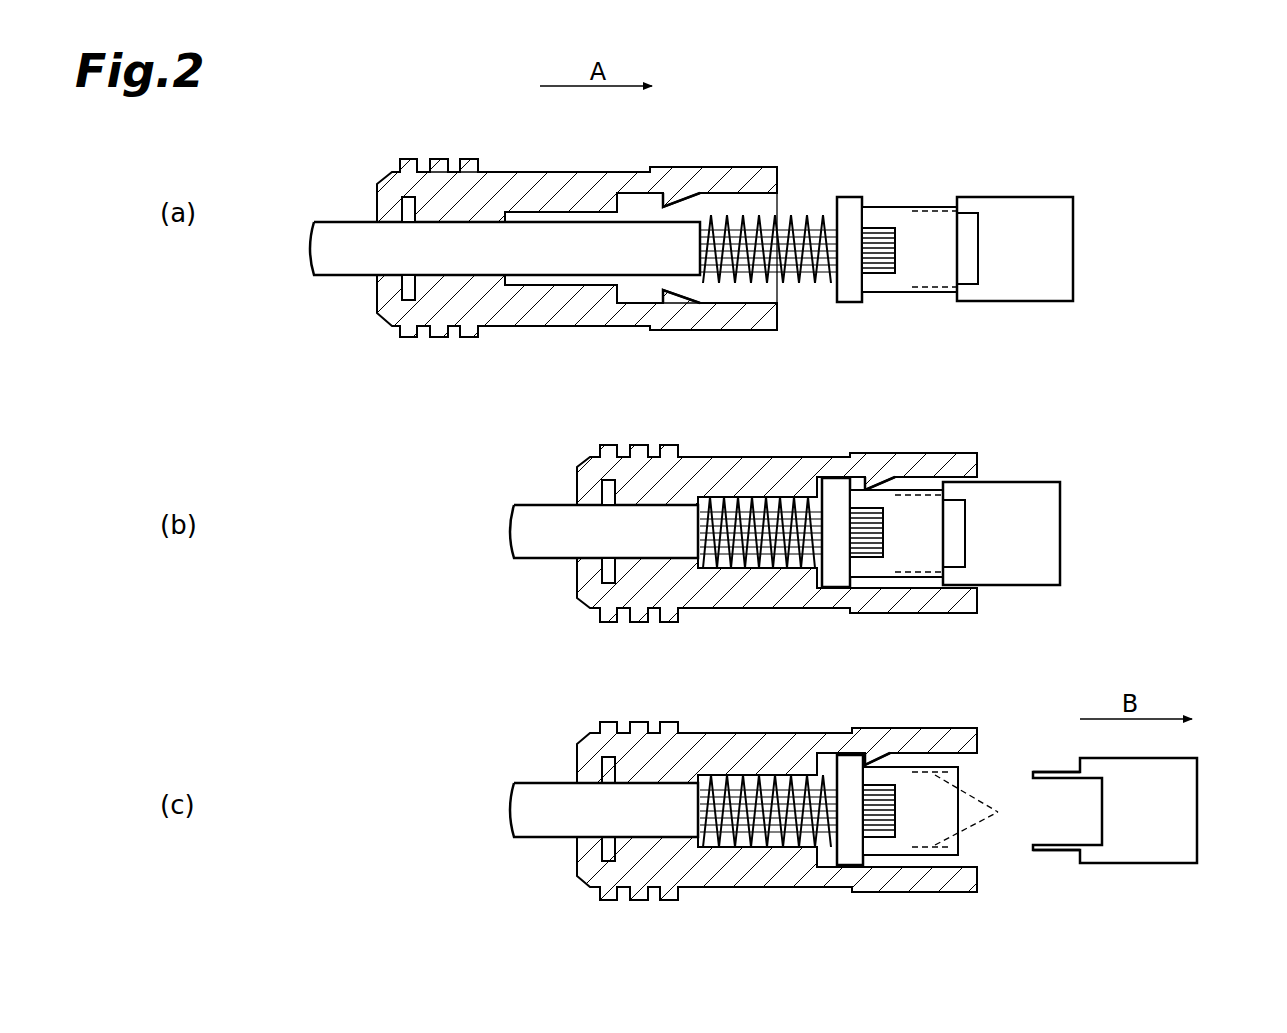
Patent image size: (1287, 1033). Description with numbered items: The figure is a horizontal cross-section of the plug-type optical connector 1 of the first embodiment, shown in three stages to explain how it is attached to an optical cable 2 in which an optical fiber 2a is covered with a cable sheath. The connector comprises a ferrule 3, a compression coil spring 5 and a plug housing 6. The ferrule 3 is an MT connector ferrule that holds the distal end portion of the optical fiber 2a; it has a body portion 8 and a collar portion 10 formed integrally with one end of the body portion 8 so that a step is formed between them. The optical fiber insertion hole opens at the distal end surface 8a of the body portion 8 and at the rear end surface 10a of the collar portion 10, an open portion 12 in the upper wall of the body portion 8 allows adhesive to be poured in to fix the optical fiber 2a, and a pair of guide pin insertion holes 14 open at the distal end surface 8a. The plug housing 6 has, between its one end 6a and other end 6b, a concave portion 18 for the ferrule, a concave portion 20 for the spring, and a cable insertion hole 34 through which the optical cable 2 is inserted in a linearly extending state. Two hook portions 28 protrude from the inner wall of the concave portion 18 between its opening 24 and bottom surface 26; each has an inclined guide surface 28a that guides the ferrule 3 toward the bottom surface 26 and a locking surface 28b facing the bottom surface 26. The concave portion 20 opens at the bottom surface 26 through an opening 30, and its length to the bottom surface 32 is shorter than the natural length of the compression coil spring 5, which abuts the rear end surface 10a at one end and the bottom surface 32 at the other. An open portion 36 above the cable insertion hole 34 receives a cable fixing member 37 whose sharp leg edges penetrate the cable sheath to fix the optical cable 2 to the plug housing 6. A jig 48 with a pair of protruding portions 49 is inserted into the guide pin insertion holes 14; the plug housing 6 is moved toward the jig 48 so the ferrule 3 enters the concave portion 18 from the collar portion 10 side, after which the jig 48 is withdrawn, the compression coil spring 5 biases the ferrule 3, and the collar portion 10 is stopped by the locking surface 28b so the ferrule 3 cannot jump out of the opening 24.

The plug-type optical connector 1 is at (926, 136).
The optical cable 2 is at (320, 252).
The optical fiber 2a is at (706, 225).
The ferrule 3 is at (898, 198).
The compression coil spring 5 is at (792, 218).
The plug housing 6 is at (553, 331).
The one end 6a is at (778, 172).
The other end 6b is at (378, 200).
The body portion 8 is at (890, 292).
The distal end surface 8a is at (965, 232).
The collar portion 10 is at (855, 292).
The rear end surface 10a is at (835, 302).
The open portion 12 is at (878, 228).
The guide pin insertion holes 14 is at (942, 292).
The concave portion for a ferrule 18 is at (738, 288).
The concave portion for a spring 20 is at (522, 215).
The opening 24 is at (780, 292).
The bottom surface 26 is at (596, 212).
The hook portion for a ferrule 28 is at (671, 193).
The guide surface 28a is at (689, 200).
The locking surface 28b is at (656, 204).
The opening 30 is at (618, 288).
The bottom surface 32 is at (500, 292).
The cable insertion hole 34 is at (460, 215).
The open portion 36 is at (408, 197).
The cable fixing member 37 is at (608, 760).
The jig 48 is at (1075, 248).
The protruding portions 49 is at (1046, 772).